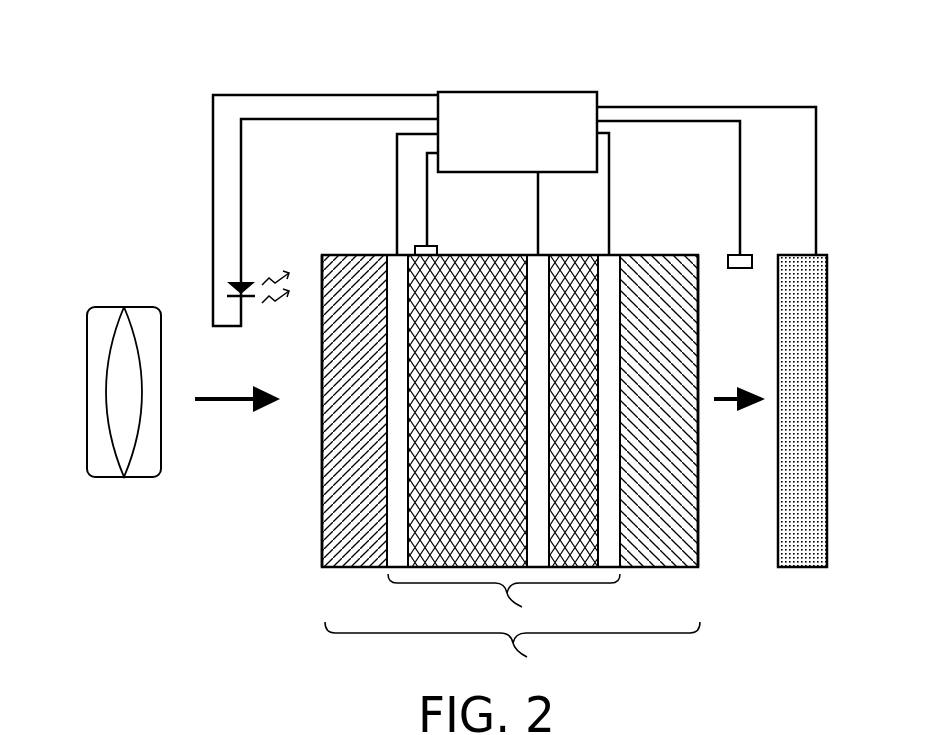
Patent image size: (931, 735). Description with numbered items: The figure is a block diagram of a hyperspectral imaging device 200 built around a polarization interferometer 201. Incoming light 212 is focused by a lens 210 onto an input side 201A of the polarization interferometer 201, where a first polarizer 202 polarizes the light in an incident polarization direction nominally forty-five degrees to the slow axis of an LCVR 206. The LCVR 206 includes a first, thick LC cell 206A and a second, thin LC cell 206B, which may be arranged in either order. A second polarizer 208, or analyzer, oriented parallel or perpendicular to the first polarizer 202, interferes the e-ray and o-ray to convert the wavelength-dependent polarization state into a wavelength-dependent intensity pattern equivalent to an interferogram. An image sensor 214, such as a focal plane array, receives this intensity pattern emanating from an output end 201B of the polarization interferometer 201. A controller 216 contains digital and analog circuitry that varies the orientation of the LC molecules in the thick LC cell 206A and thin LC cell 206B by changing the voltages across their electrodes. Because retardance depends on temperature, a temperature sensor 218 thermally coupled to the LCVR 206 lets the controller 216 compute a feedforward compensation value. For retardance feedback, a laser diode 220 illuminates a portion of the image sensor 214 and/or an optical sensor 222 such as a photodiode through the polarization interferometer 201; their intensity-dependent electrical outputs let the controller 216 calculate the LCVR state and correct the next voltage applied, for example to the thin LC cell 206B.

The hyperspectral imaging device 200 is at (128, 112).
The polarization interferometer 201 is at (511, 465).
The input side of the polarization interferometer 201A is at (320, 567).
The output end of the polarization interferometer 201B is at (700, 550).
The first polarizer 202 is at (347, 255).
The LCVR 206 is at (504, 439).
The first, thick LC cell 206A is at (458, 255).
The second, thin LC cell 206B is at (571, 255).
The second polarizer 208 is at (660, 255).
The lens 210 is at (124, 307).
The incoming light 212 is at (226, 401).
The image sensor 214 is at (803, 570).
The controller 216 is at (510, 92).
The temperature sensor 218 is at (433, 246).
The laser diode 220 is at (243, 282).
The optical sensor 222 is at (745, 255).